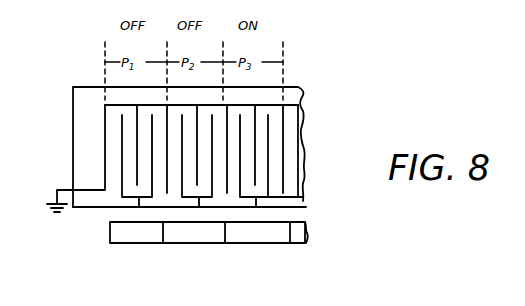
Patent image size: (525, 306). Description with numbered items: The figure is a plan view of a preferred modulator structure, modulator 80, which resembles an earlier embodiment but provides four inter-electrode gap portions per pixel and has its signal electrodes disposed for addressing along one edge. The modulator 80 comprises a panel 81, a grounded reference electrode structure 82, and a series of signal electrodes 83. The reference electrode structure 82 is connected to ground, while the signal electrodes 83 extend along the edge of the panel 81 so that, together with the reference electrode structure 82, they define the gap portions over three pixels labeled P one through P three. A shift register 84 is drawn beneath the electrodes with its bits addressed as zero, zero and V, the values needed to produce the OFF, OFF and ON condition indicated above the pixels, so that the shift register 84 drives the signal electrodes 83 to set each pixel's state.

The modulator 80 is at (314, 100).
The panel 81 is at (298, 175).
The grounded reference electrode structure 82 is at (105, 123).
The signal electrodes 83 is at (122, 190).
The shift register 84 is at (203, 242).